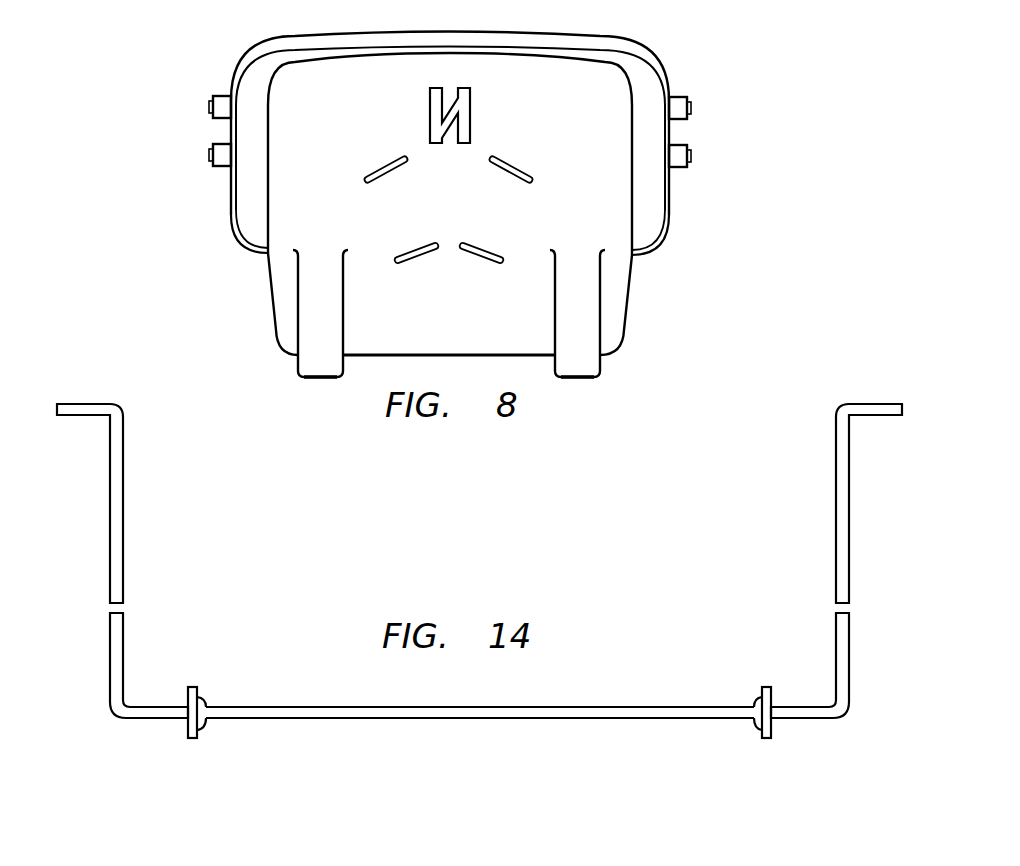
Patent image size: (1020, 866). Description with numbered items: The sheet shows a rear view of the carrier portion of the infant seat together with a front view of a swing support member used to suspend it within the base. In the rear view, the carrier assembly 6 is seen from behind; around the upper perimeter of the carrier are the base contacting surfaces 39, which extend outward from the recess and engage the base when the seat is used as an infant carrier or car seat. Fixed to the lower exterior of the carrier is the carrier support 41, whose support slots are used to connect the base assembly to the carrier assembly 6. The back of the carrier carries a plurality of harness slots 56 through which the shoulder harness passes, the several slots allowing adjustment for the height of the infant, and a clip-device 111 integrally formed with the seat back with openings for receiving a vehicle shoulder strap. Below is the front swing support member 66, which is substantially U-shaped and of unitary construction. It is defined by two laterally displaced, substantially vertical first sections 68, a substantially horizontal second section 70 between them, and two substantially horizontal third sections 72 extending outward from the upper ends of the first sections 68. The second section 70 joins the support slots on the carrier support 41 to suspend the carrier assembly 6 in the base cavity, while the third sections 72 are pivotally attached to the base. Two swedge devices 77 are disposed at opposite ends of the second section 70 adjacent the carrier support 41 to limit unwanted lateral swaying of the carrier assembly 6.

In FIG. 8, the carrier assembly 6 is at (722, 186).
In FIG. 8, the base contacting surfaces 39 is at (648, 123).
In FIG. 8, the carrier support 41 is at (318, 379).
In FIG. 8, the harness slots 56 is at (513, 168).
In FIG. 8, the clip-device 111 is at (432, 100).
In FIG. 14, the front swing support member 66 is at (176, 756).
In FIG. 14, the first sections 68 is at (124, 498).
In FIG. 14, the second section 70 is at (143, 707).
In FIG. 14, the third sections 72 is at (90, 404).
In FIG. 14, the swedge devices 77 is at (193, 687).